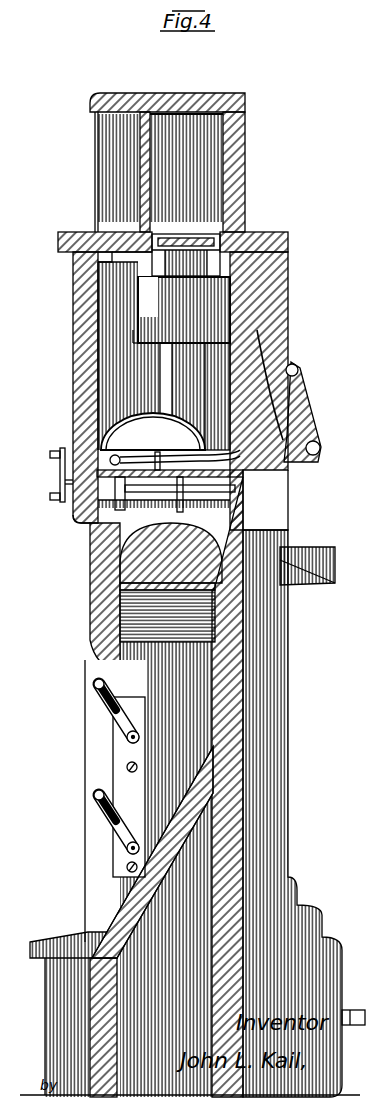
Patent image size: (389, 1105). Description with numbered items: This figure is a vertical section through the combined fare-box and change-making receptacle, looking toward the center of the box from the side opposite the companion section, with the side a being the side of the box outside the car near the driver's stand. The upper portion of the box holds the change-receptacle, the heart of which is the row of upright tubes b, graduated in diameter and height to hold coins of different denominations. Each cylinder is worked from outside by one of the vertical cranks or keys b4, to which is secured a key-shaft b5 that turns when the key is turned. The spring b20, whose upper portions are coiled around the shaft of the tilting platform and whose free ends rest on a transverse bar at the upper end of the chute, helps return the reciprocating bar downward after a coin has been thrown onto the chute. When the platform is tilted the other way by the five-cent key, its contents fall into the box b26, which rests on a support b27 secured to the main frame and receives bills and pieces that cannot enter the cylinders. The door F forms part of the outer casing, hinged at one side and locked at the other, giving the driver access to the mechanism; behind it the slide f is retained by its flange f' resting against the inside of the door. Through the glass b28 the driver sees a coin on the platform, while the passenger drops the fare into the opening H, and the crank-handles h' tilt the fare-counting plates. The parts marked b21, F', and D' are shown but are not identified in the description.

The glass b28 is at (140, 138).
The spring b20 is at (125, 229).
The valve b21 is at (196, 233).
The slide f is at (158, 242).
The flange f' is at (89, 263).
The box b26 is at (145, 293).
The support b27 is at (133, 341).
The side a is at (74, 376).
The chamber lining F' is at (89, 356).
The upright tubes b is at (184, 396).
The door F is at (153, 431).
The opening H is at (298, 433).
The vertical cranks or keys b4 is at (54, 475).
The key-shaft b5 is at (78, 510).
The clamp plate D' is at (320, 566).
The crank-handles h' is at (101, 778).